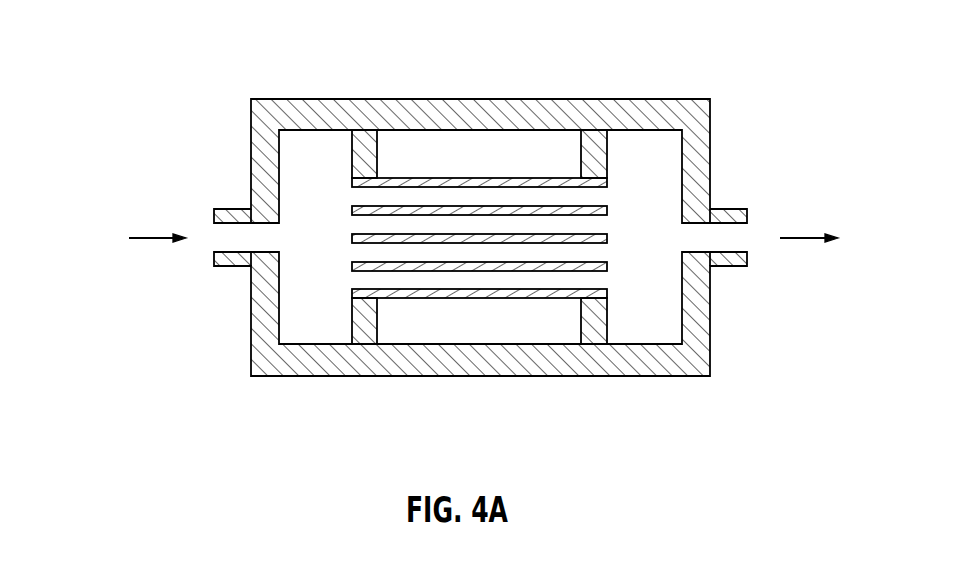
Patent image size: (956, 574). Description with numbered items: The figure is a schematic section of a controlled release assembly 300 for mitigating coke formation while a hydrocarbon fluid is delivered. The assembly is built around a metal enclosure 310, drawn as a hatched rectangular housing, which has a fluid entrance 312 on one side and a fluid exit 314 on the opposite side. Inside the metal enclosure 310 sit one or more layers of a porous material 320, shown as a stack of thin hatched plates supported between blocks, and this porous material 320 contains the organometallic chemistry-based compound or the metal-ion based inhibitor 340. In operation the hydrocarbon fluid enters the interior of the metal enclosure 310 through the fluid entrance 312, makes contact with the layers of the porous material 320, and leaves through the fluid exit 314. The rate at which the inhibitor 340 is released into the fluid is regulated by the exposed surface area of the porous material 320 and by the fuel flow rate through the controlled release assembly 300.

The controlled release assembly 300 is at (449, 222).
The metal enclosure 310 is at (480, 203).
The fluid entrance 312 is at (217, 193).
The fluid exit 314 is at (742, 193).
The porous material 320 is at (479, 287).
The M n+ based inhibitor 340 is at (421, 297).